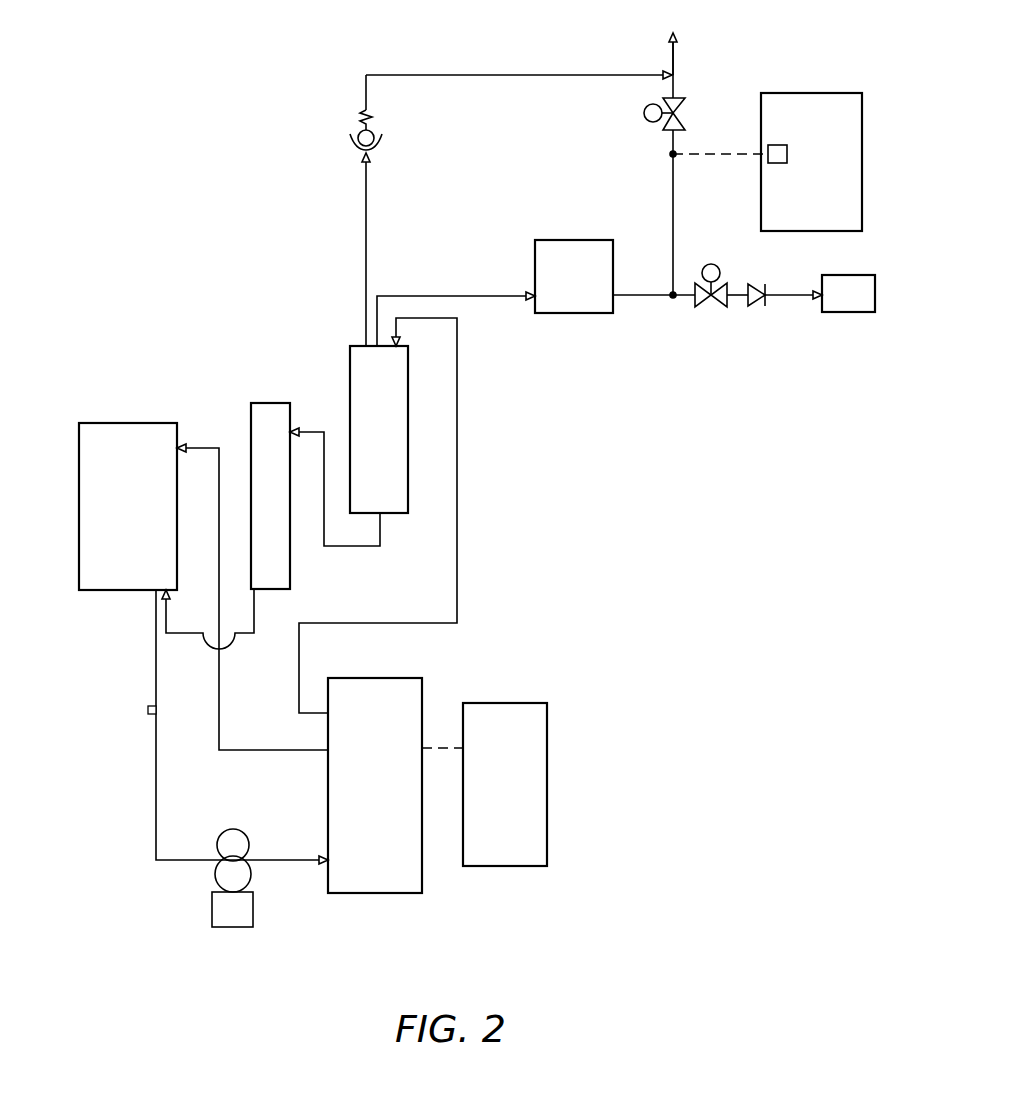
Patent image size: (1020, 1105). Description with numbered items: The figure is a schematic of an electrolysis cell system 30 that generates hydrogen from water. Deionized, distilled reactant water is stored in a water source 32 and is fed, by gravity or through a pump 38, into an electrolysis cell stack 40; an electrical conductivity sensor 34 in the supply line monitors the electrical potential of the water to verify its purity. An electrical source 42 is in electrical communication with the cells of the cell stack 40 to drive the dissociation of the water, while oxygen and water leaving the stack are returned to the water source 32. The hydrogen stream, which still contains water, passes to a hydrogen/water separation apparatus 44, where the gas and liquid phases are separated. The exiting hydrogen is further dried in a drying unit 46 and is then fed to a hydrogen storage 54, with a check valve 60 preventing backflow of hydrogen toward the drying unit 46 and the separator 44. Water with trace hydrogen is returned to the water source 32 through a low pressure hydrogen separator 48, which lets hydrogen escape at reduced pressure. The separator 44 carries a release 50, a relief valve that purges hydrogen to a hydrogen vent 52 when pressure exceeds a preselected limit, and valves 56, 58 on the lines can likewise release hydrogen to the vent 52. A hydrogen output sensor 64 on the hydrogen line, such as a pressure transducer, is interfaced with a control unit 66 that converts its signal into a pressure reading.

The electrolysis cell system 30 is at (160, 130).
The water source 32 is at (79, 437).
The electrical conductivity sensor 34 is at (142, 711).
The pump 38 is at (212, 873).
The electrolysis cell stack 40 is at (407, 895).
The electrical source 42 is at (547, 804).
The hydrogen/water separation apparatus 44 is at (420, 428).
The drying unit 46 is at (602, 313).
The low pressure hydrogen separator 48 is at (253, 403).
The release 50 is at (352, 144).
The hydrogen vent 52 is at (669, 42).
The hydrogen storage 54 is at (848, 313).
The valve 56 is at (707, 307).
The valve 58 is at (684, 99).
The check valve 60 is at (755, 308).
The hydrogen output sensor 64 is at (780, 163).
The control unit 66 is at (809, 93).